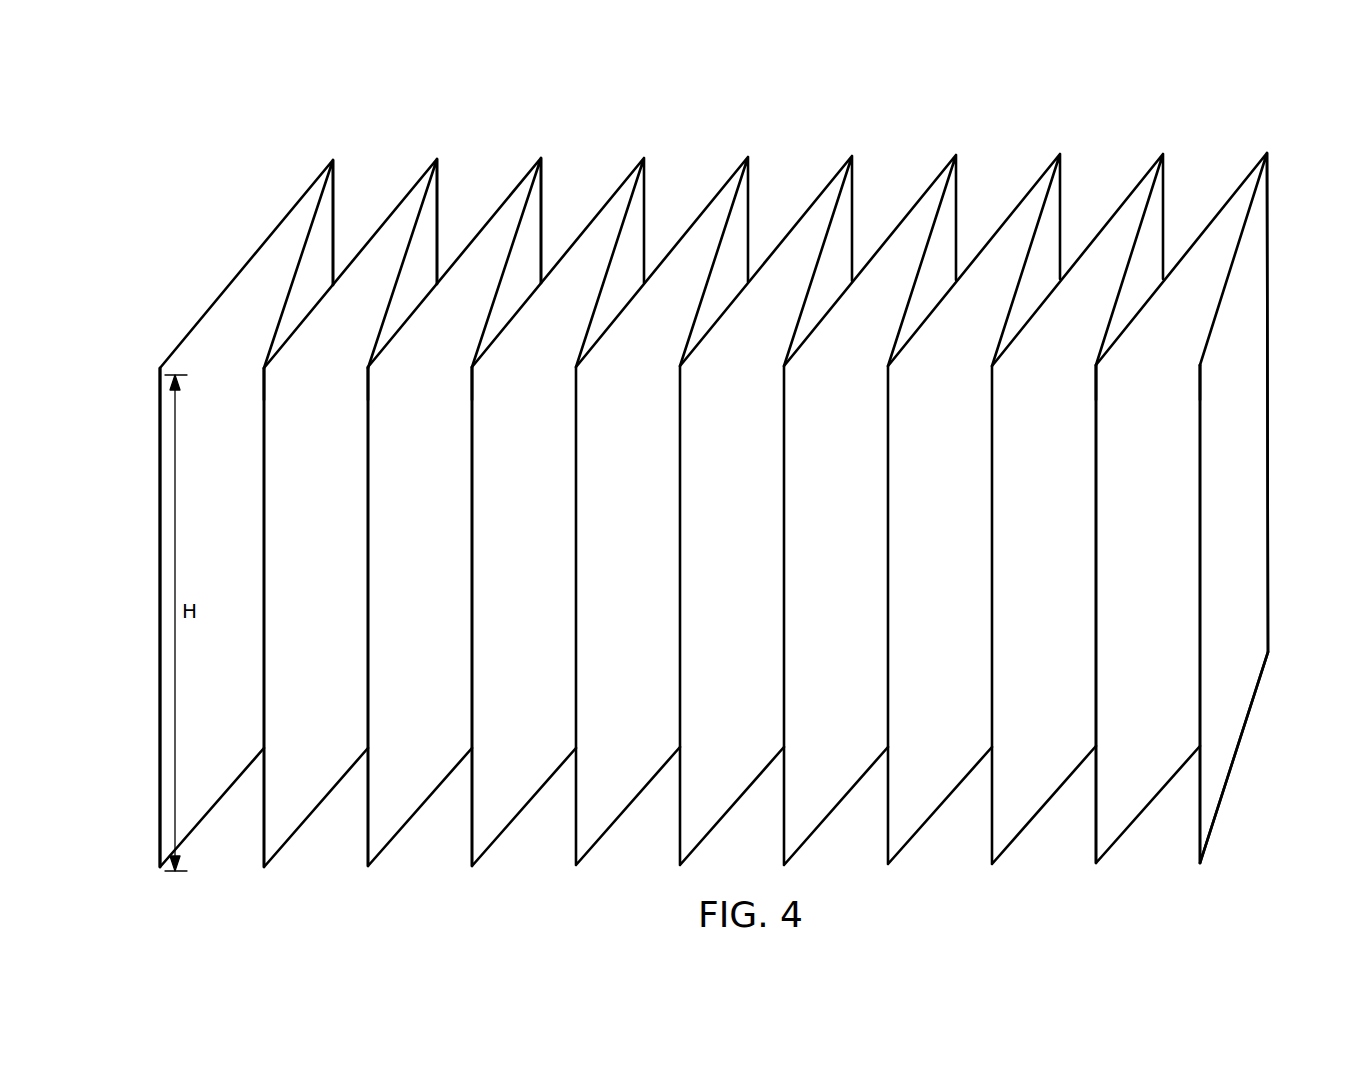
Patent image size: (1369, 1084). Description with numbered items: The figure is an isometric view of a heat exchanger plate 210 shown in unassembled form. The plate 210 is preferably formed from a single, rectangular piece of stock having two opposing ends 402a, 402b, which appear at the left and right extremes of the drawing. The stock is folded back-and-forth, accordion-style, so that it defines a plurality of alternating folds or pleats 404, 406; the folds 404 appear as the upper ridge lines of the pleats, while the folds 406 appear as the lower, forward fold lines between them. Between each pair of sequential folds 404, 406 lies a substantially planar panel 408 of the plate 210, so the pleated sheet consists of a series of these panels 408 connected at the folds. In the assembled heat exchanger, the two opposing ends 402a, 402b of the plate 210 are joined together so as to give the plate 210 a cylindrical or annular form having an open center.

The heat exchanger plate 210 is at (786, 131).
The opposing end 402a is at (158, 396).
The opposing end 402b is at (1202, 542).
The fold 404 is at (333, 160).
The fold 406 is at (265, 370).
The planar panel 408 is at (237, 497).